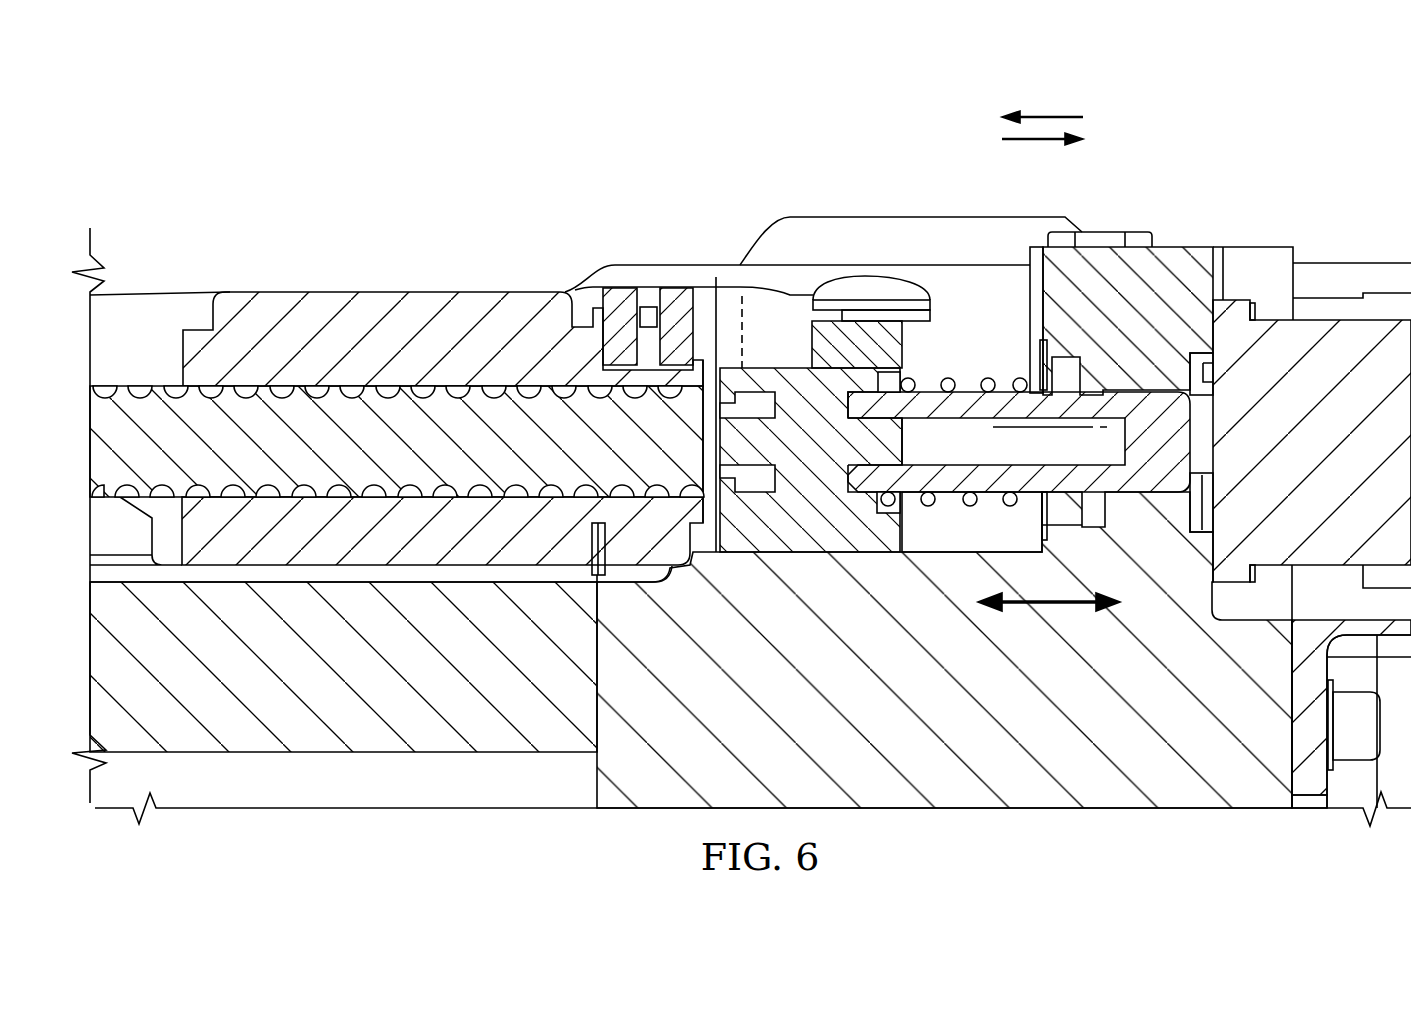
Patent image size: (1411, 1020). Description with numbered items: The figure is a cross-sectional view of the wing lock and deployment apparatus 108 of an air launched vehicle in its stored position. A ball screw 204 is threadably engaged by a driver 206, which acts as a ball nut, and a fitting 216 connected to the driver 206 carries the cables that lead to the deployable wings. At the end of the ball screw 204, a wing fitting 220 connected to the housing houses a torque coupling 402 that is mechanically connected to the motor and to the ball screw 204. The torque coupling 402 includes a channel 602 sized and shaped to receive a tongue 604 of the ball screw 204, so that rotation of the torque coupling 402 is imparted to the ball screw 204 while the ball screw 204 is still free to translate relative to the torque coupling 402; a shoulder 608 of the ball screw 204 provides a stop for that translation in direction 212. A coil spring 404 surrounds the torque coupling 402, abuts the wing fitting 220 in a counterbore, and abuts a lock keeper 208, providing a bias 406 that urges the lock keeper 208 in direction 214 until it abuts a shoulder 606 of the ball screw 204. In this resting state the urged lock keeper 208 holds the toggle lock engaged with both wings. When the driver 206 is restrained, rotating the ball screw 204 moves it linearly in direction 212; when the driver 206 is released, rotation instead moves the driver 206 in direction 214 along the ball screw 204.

The wing lock and deployment apparatus 108 is at (535, 122).
The ball screw 204 is at (148, 405).
The driver 206 is at (323, 300).
The lock keeper 208 is at (863, 321).
The direction 212 is at (1036, 142).
The direction 214 is at (1048, 114).
The fitting 216 is at (682, 292).
The wing fitting 220 is at (1170, 247).
The torque coupling 402 is at (950, 492).
The spring 404 is at (915, 385).
The bias 406 is at (1040, 604).
The channel 602 is at (1003, 452).
The tongue 604 is at (903, 432).
The shoulder 606 is at (706, 483).
The shoulder 608 is at (770, 380).